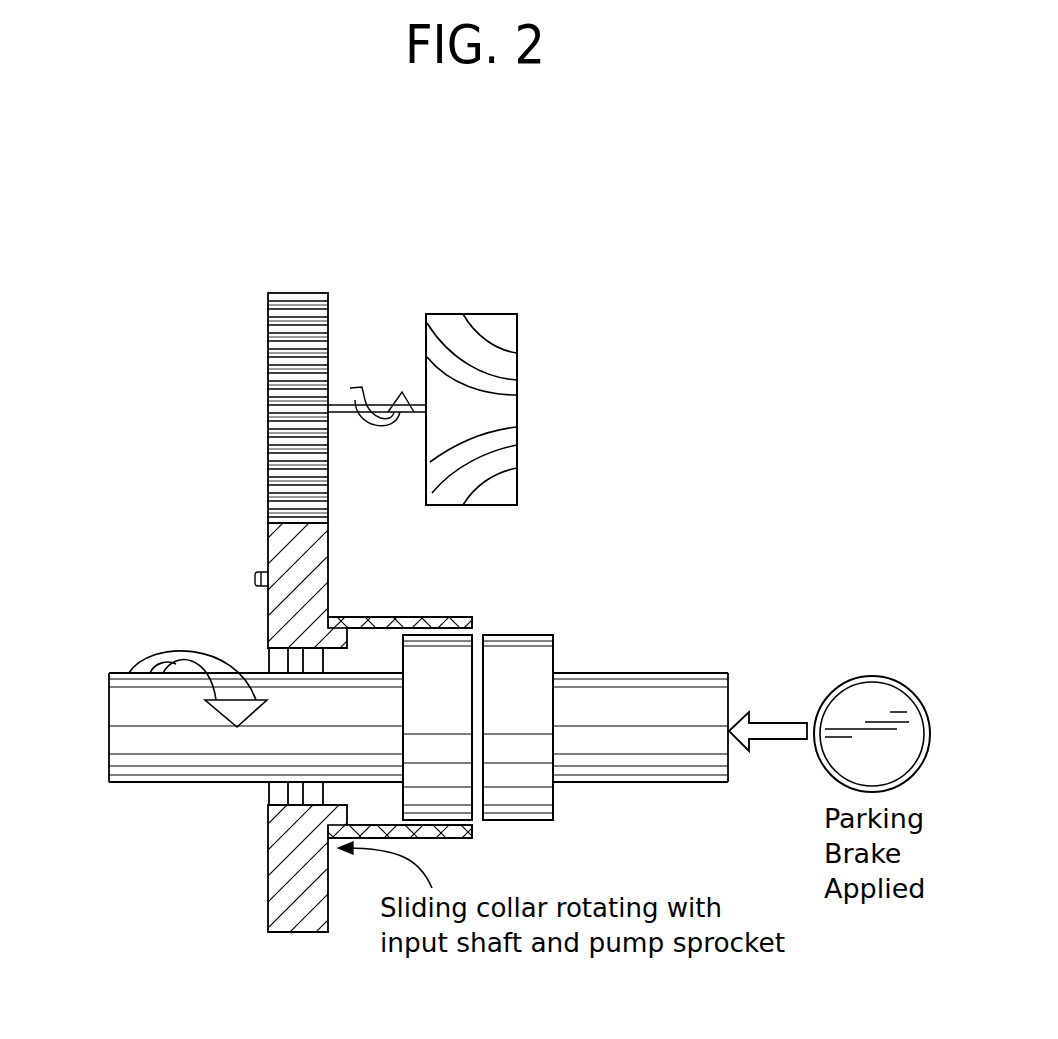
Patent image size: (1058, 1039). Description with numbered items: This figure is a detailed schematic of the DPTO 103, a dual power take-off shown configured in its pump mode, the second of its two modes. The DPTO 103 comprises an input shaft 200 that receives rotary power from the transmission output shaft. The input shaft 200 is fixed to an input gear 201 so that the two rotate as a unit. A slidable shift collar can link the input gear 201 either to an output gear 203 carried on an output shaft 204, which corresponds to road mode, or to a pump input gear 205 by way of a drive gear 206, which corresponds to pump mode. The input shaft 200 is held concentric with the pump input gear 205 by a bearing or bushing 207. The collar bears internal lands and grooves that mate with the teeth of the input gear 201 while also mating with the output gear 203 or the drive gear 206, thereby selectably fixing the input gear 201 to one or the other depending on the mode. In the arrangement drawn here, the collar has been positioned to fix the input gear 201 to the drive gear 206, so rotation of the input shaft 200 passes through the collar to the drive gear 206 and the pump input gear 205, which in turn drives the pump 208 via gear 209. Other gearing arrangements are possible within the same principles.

The DPTO 103 is at (764, 338).
The input shaft 200 is at (110, 735).
The input gear 201 is at (425, 662).
The output gear 203 is at (512, 673).
The output shaft 204 is at (647, 707).
The pump input gear 205 is at (255, 575).
The drive gear 206 is at (342, 615).
The bearing or bushing 207 is at (268, 792).
The pump 208 is at (463, 314).
The gear 209 is at (268, 374).